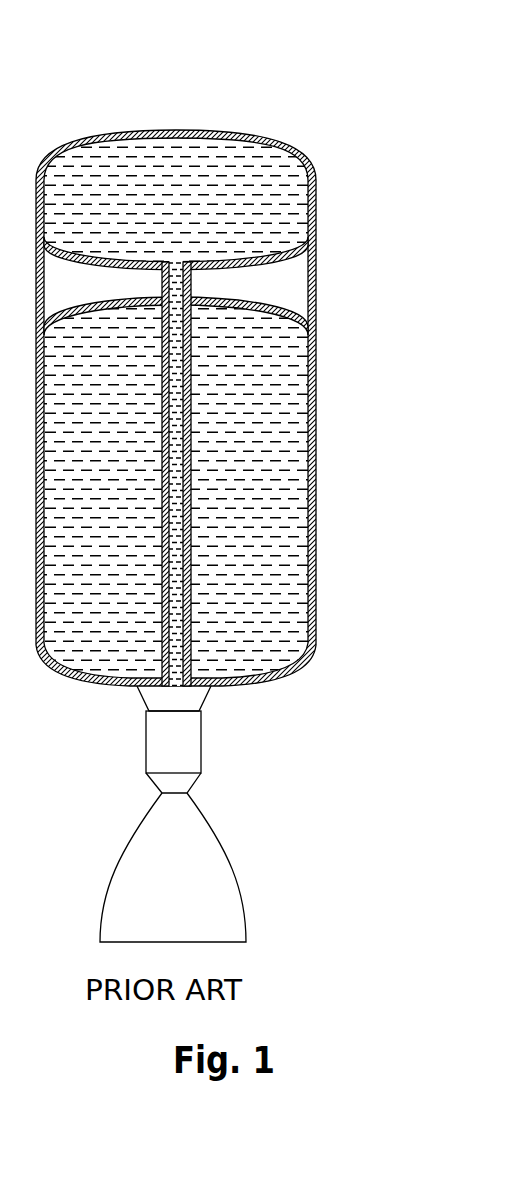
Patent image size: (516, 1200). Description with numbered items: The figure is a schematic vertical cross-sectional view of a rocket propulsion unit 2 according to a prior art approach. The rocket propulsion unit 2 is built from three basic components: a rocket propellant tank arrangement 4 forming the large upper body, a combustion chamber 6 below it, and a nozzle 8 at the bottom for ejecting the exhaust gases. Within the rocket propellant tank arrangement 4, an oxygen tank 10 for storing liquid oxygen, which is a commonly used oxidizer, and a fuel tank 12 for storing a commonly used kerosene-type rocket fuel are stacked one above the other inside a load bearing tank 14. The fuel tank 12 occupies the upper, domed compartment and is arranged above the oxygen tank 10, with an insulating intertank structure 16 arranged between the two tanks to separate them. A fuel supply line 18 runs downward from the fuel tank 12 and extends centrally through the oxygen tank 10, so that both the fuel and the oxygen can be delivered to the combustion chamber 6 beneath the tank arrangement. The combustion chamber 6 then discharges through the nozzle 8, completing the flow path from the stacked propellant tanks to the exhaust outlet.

The rocket propulsion unit 2 is at (222, 475).
The rocket propellant tank arrangement 4 is at (222, 380).
The combustion chamber 6 is at (183, 745).
The nozzle 8 is at (175, 785).
The oxygen tank 10 is at (300, 410).
The fuel tank 12 is at (122, 156).
The load bearing tank 14 is at (320, 177).
The insulating intertank structure 16 is at (320, 253).
The fuel supply line 18 is at (178, 457).